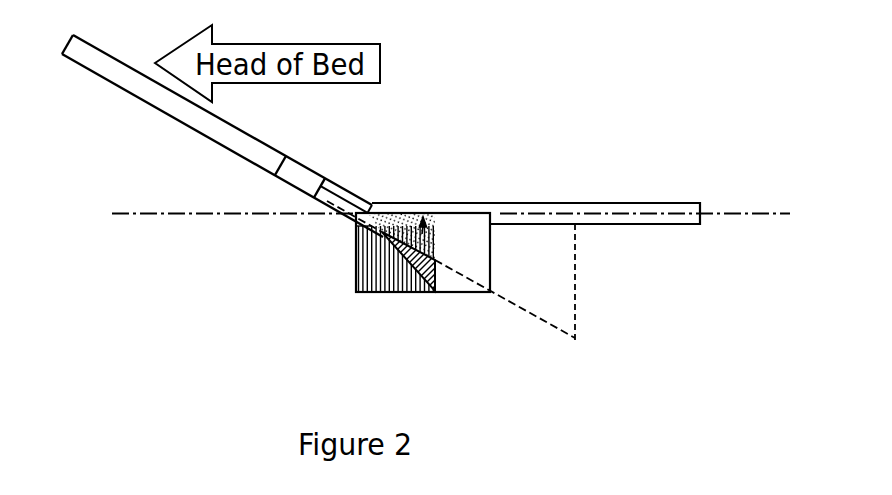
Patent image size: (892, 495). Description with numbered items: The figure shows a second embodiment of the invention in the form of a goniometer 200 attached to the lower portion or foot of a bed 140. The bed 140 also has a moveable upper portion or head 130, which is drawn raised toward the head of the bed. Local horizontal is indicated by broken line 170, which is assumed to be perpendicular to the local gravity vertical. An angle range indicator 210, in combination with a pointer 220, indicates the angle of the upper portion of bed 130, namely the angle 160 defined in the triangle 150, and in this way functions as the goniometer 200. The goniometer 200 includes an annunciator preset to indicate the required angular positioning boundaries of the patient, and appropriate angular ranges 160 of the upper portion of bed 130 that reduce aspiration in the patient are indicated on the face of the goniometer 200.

The upper portion of bed 130 is at (257, 136).
The bed 140 is at (545, 203).
The triangle 150 is at (533, 313).
The angle 160 is at (421, 241).
The broken line 170 is at (720, 213).
The goniometer 200 is at (457, 282).
The angle range indicator 210 is at (413, 270).
The pointer 220 is at (329, 211).